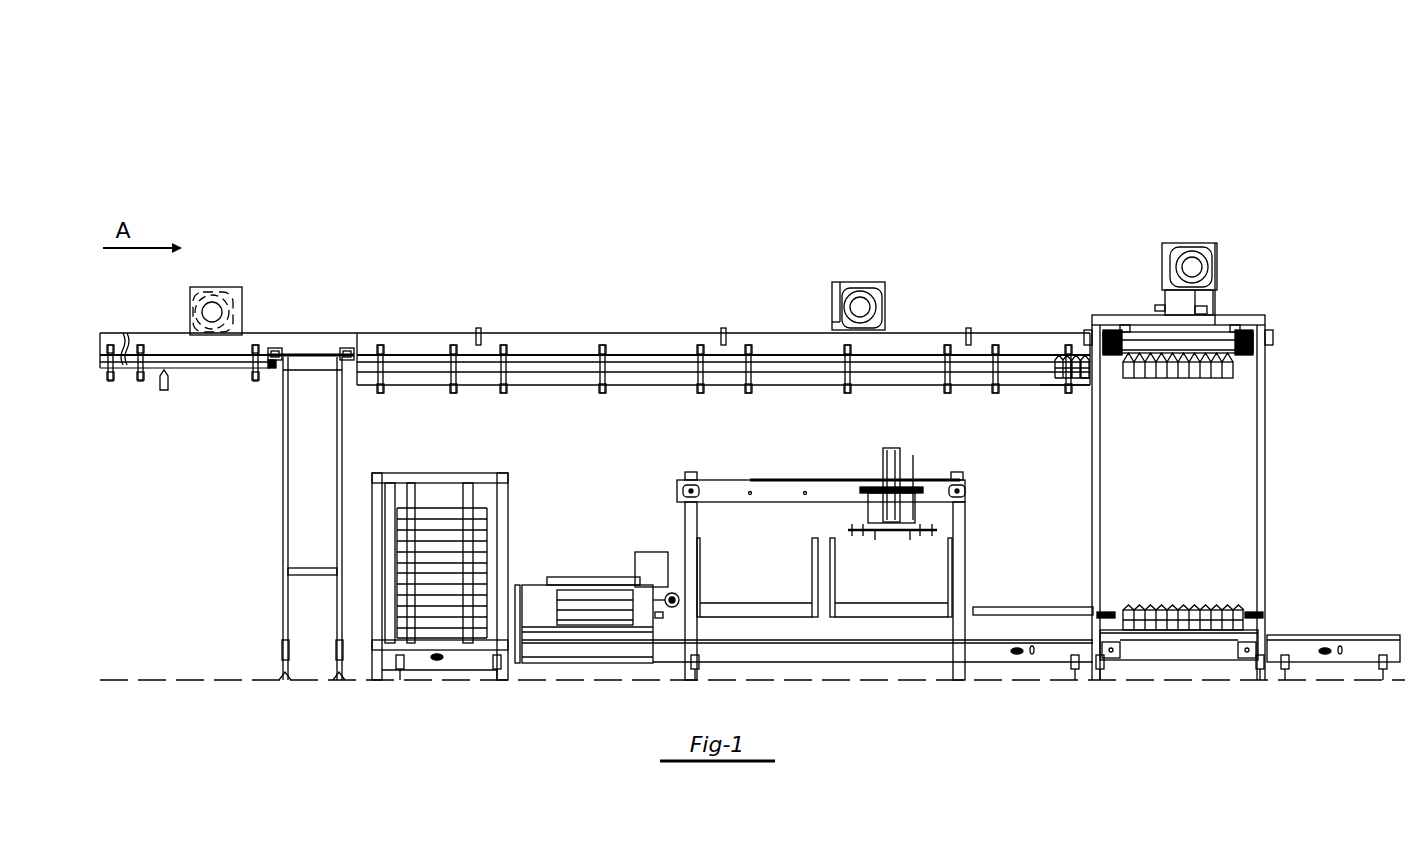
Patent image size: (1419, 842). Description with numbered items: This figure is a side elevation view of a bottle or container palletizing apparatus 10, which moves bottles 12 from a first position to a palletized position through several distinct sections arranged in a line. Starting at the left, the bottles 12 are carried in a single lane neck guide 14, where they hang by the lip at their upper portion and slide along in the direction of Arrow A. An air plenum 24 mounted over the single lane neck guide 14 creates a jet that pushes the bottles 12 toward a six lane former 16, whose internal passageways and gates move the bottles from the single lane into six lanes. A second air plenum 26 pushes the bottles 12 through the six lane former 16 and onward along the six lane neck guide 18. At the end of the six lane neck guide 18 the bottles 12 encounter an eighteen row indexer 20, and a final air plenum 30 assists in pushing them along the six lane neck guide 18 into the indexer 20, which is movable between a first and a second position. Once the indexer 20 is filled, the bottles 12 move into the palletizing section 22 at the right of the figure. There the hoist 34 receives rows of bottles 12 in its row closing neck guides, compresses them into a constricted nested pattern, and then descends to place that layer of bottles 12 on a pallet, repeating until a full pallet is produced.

The palletizing apparatus 10 is at (543, 283).
The bottles 12 is at (164, 392).
The single lane neck guide 14 is at (160, 345).
The six lane former 16 is at (308, 338).
The six lane neck guide 18 is at (645, 358).
The eighteen row indexer 20 is at (1030, 353).
The palletizing section 22 is at (1120, 253).
The air plenum 24 is at (213, 292).
The second air plenum 26 is at (860, 283).
The final air plenum 30 is at (1205, 245).
The hoist 34 is at (1247, 365).